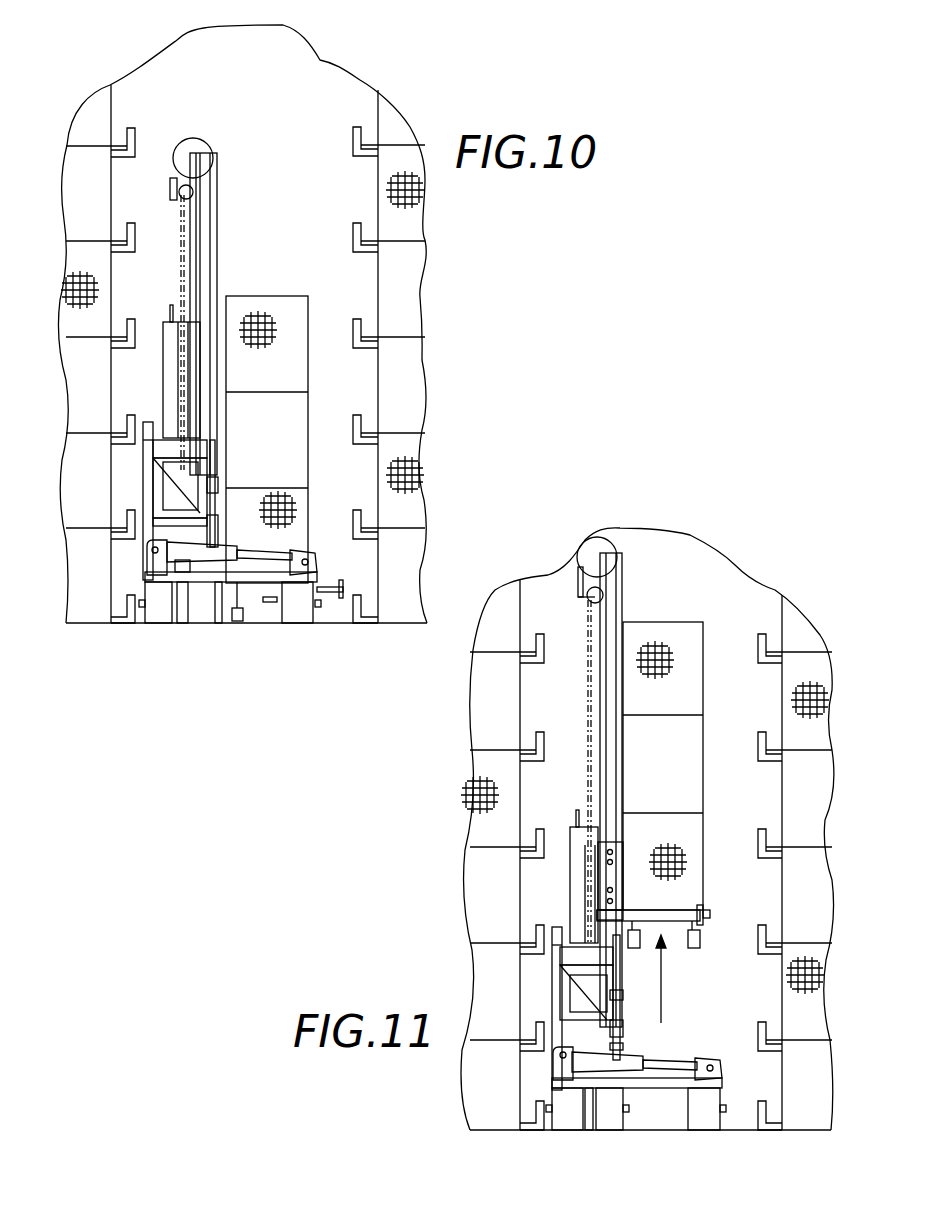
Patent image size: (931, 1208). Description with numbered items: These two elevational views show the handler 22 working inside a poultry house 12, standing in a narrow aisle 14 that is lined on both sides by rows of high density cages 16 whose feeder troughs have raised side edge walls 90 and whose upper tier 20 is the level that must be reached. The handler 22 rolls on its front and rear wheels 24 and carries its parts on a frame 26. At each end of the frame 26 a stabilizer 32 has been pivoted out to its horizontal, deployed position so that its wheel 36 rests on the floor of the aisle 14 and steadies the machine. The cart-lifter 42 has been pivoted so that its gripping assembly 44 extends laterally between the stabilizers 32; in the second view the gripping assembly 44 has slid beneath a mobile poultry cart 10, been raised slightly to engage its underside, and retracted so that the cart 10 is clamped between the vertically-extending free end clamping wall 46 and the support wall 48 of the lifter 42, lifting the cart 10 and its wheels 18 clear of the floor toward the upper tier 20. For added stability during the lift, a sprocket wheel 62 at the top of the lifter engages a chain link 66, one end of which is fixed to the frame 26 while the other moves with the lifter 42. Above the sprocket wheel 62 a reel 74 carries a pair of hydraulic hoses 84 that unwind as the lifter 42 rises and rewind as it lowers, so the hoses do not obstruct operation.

In FIG. 10, the mobile poultry cart 10 is at (280, 296).
In FIG. 11, the mobile poultry cart 10 is at (653, 618).
In FIG. 10, the poultry house 12 is at (125, 68).
In FIG. 11, the poultry house 12 is at (685, 512).
In FIG. 10, the narrow aisle 14 is at (345, 623).
In FIG. 11, the narrow aisle 14 is at (738, 1130).
In FIG. 10, the high density cages 16 is at (427, 380).
In FIG. 11, the high density cages 16 is at (478, 888).
In FIG. 11, the wheels 18 is at (702, 938).
In FIG. 10, the upper tier 20 is at (80, 117).
In FIG. 10, the handler 22 is at (208, 177).
In FIG. 11, the handler 22 is at (613, 565).
In FIG. 10, the front and rear wheels 24 is at (160, 623).
In FIG. 11, the front and rear wheels 24 is at (568, 1130).
In FIG. 11, the frame 26 is at (550, 997).
In FIG. 10, the stabilizer 32 is at (257, 583).
In FIG. 11, the stabilizer 32 is at (650, 1088).
In FIG. 10, the wheel 36 is at (295, 620).
In FIG. 11, the wheel 36 is at (703, 1130).
In FIG. 10, the cart-lifter 42 is at (210, 222).
In FIG. 11, the cart-lifter 42 is at (608, 707).
In FIG. 10, the gripping assembly 44 is at (328, 600).
In FIG. 11, the gripping assembly 44 is at (667, 923).
In FIG. 11, the free end clamping wall 46 is at (705, 912).
In FIG. 11, the support wall 48 is at (623, 847).
In FIG. 11, the sprocket wheel 62 is at (588, 603).
In FIG. 11, the chain link 66 is at (587, 797).
In FIG. 10, the reel 74 is at (195, 140).
In FIG. 11, the reel 74 is at (588, 548).
In FIG. 11, the hydraulic hoses 84 is at (593, 597).
In FIG. 10, the raised side edge walls 90 is at (140, 146).
In FIG. 11, the raised side edge walls 90 is at (757, 657).